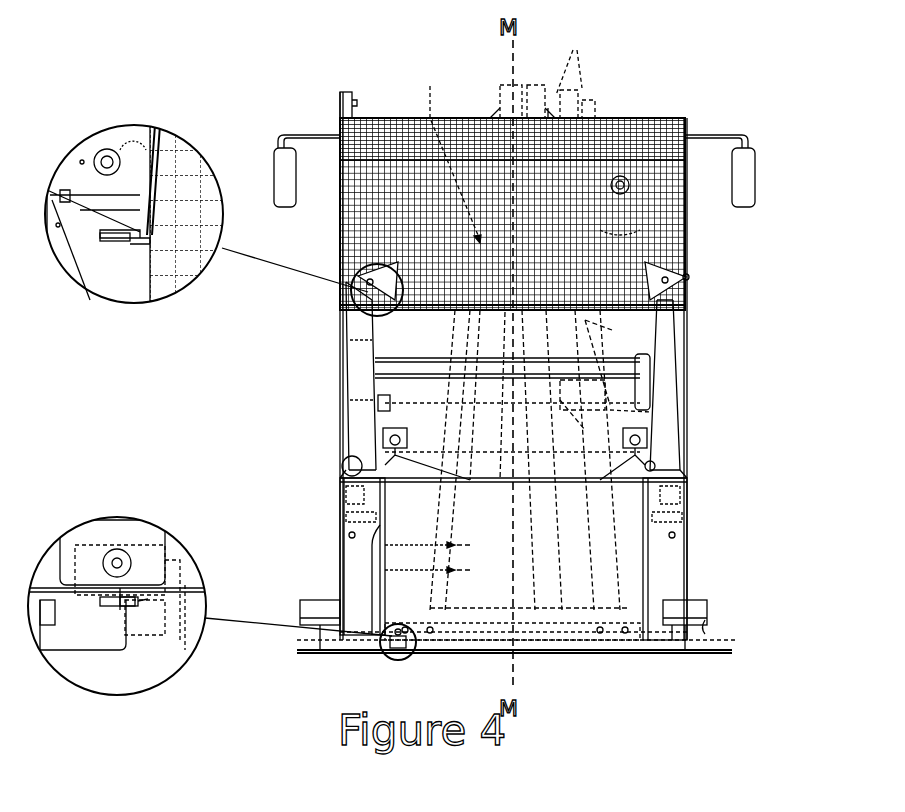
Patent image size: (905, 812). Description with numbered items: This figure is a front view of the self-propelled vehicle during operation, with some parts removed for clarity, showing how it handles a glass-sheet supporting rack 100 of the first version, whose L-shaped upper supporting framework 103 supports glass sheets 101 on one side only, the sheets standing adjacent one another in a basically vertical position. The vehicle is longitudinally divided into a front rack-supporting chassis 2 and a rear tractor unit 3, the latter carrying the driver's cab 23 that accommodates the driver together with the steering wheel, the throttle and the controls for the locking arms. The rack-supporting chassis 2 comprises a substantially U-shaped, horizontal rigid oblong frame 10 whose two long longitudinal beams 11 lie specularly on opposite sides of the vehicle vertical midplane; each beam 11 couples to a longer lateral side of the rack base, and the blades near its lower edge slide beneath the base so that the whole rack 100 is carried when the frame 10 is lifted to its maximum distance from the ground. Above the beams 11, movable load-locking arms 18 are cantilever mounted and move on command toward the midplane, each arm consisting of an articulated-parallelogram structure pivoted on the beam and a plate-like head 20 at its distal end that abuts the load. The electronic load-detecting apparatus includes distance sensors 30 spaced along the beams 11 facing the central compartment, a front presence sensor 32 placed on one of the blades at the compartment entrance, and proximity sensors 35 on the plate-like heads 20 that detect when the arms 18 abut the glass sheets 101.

The rack-supporting chassis 2 is at (708, 622).
The rear tractor unit 3 is at (646, 112).
The rigid oblong frame 10 is at (440, 495).
The longitudinal beams 11 is at (688, 497).
The movable load-locking arms 18 is at (338, 322).
The plate-like head 20 is at (153, 140).
The driver's cab 23 is at (372, 116).
The distance sensors 30 is at (625, 548).
The front presence sensor 32 is at (130, 606).
The proximity sensors 35 is at (118, 240).
The glass-sheet supporting rack 100 is at (525, 151).
The glass sheets 101 is at (583, 61).
The L-shaped upper supporting framework 103 is at (690, 408).